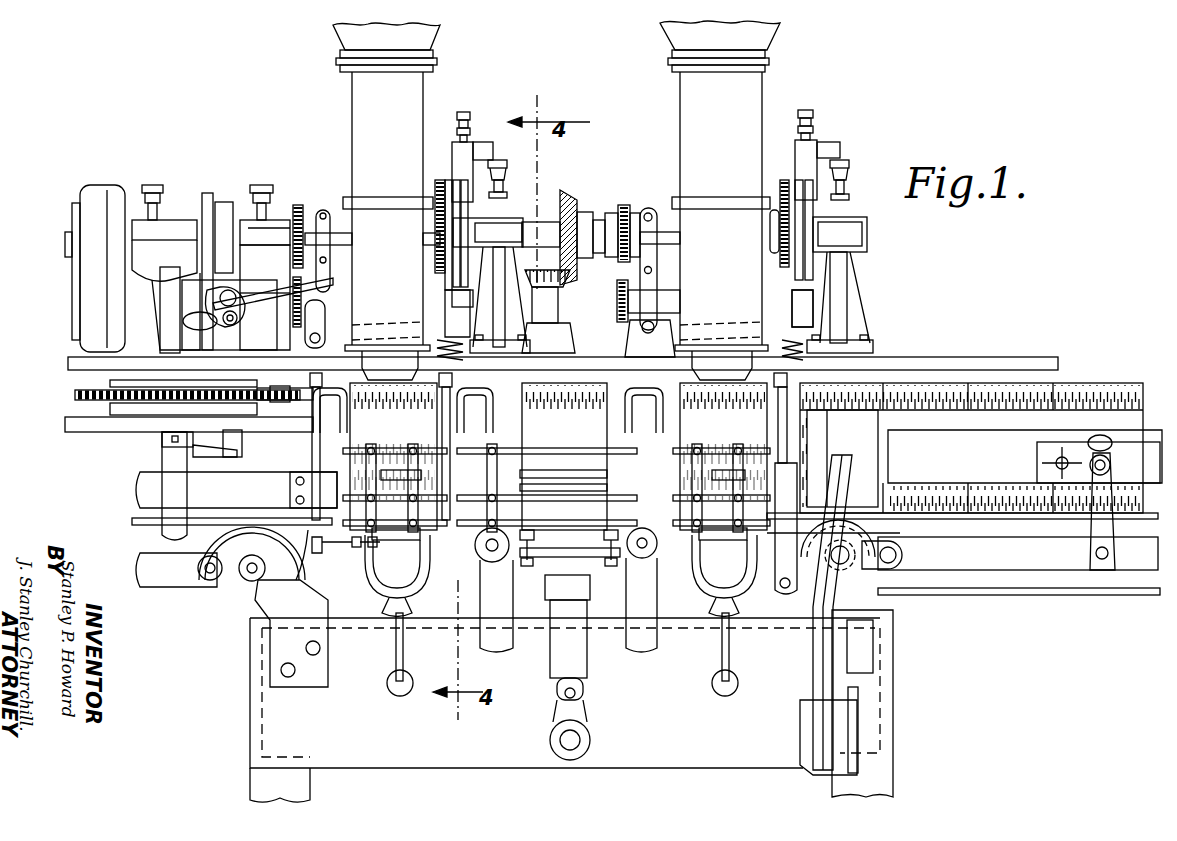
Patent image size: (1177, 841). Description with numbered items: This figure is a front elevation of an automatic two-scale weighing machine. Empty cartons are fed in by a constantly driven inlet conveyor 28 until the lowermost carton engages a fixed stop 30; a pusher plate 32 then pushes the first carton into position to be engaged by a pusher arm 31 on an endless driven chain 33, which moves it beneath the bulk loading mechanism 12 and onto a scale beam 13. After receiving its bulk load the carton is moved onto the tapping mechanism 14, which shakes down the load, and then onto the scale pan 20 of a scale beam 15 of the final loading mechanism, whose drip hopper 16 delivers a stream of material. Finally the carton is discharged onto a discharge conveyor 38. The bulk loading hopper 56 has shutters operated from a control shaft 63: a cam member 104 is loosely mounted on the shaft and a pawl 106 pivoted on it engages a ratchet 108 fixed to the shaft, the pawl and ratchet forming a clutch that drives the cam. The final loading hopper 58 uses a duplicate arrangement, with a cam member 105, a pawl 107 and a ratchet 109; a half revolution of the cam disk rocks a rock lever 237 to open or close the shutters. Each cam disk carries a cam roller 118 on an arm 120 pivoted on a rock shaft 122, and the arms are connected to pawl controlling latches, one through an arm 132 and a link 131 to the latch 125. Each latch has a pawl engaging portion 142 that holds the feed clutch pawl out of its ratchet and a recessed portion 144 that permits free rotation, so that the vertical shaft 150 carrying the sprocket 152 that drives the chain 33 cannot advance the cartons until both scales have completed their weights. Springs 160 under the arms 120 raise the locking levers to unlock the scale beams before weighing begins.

The bulk loading mechanism 12 is at (797, 72).
The drip hopper 16 is at (303, 106).
The hopper 58 is at (352, 163).
The hopper 56 is at (757, 115).
The cam member 105 is at (438, 190).
The pawl 107 is at (446, 178).
The rock lever 237 is at (468, 183).
The control shaft 63 is at (552, 200).
The cam member 104 is at (793, 178).
The pawl 106 is at (783, 192).
The ratchet 108 is at (764, 219).
The ratchet 109 is at (446, 225).
The arm 132 is at (333, 282).
The rock shaft 122 is at (340, 300).
The arm 120 is at (366, 324).
The cam roller 118 is at (452, 318).
The recessed portion 144 is at (170, 282).
The pawl engaging portion 142 is at (236, 293).
The link 131 is at (238, 313).
The pawl controlling latch 125 is at (196, 322).
The spring 160 is at (448, 358).
The sprocket 152 is at (75, 392).
The endless driven chain 33 is at (273, 410).
The vertical shaft 150 is at (165, 460).
The pusher arm 31 is at (317, 458).
The fixed stop 30 is at (800, 466).
The pusher plate 32 is at (866, 457).
The inlet conveyor 28 is at (966, 518).
The discharge conveyor 38 is at (204, 558).
The scale pan 20 is at (352, 543).
The scale beam 15 is at (372, 558).
The tapping mechanism 14 is at (500, 570).
The scale beam 13 is at (653, 566).